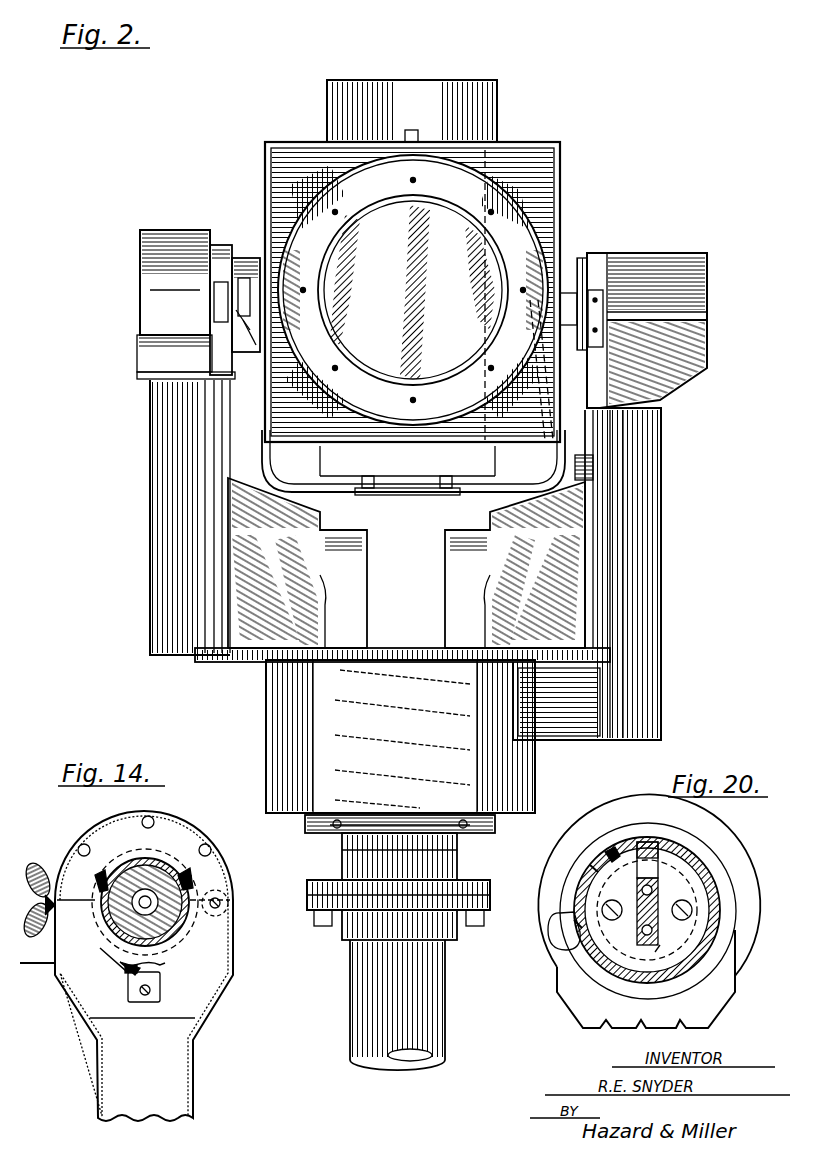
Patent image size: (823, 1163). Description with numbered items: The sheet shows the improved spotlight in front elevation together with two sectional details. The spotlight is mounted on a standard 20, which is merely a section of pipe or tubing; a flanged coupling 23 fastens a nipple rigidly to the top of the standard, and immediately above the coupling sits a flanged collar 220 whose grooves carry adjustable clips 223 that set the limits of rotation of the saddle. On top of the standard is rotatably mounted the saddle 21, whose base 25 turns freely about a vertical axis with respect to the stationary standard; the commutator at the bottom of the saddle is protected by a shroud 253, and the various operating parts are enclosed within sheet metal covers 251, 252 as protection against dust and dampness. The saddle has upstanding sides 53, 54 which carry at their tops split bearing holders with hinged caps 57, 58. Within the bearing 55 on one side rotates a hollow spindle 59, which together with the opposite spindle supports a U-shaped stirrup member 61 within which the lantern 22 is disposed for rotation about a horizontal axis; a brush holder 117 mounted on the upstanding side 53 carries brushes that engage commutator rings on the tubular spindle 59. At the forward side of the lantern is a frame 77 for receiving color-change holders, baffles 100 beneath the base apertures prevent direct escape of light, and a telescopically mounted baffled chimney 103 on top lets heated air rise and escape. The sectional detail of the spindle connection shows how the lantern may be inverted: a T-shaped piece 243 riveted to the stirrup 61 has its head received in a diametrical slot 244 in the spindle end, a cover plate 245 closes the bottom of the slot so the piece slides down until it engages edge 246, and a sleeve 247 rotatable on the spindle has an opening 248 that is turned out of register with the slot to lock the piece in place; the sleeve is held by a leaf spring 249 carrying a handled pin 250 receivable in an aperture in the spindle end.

In FIG. 2, the baffled chimney 103 is at (330, 112).
In FIG. 2, the frame 77 is at (263, 160).
In FIG. 2, the lantern 22 is at (515, 233).
In FIG. 2, the hinged cap 58 is at (226, 244).
In FIG. 2, the hinged cap 57 is at (596, 255).
In FIG. 14, the hinged cap 57 is at (183, 848).
In FIG. 2, the upstanding side 54 is at (225, 456).
In FIG. 2, the upstanding side 53 is at (592, 492).
In FIG. 2, the saddle 21 is at (596, 440).
In FIG. 2, the U-shaped stirrup member 61 is at (590, 468).
In FIG. 2, the sheet metal cover 252 is at (185, 527).
In FIG. 2, the sheet metal cover 251 is at (645, 578).
In FIG. 2, the baffle 100 is at (438, 498).
In FIG. 2, the base 25 is at (258, 652).
In FIG. 2, the shroud 253 is at (300, 742).
In FIG. 2, the clip 223 is at (340, 834).
In FIG. 2, the flanged collar 220 is at (462, 832).
In FIG. 2, the flanged coupling 23 is at (306, 899).
In FIG. 2, the standard 20 is at (378, 992).
In FIG. 14, the bearing 55 is at (165, 842).
In FIG. 14, the hollow spindle 59 is at (160, 905).
In FIG. 14, the brush holder 117 is at (128, 990).
In FIG. 20, the leaf spring 249 is at (580, 884).
In FIG. 20, the opening 248 is at (618, 852).
In FIG. 20, the diametrical slot 244 is at (655, 866).
In FIG. 20, the T-shaped piece 243 is at (658, 896).
In FIG. 20, the cover plate 245 is at (682, 925).
In FIG. 20, the edge 246 is at (650, 945).
In FIG. 20, the sleeve 247 is at (660, 950).
In FIG. 20, the handled pin 250 is at (564, 936).